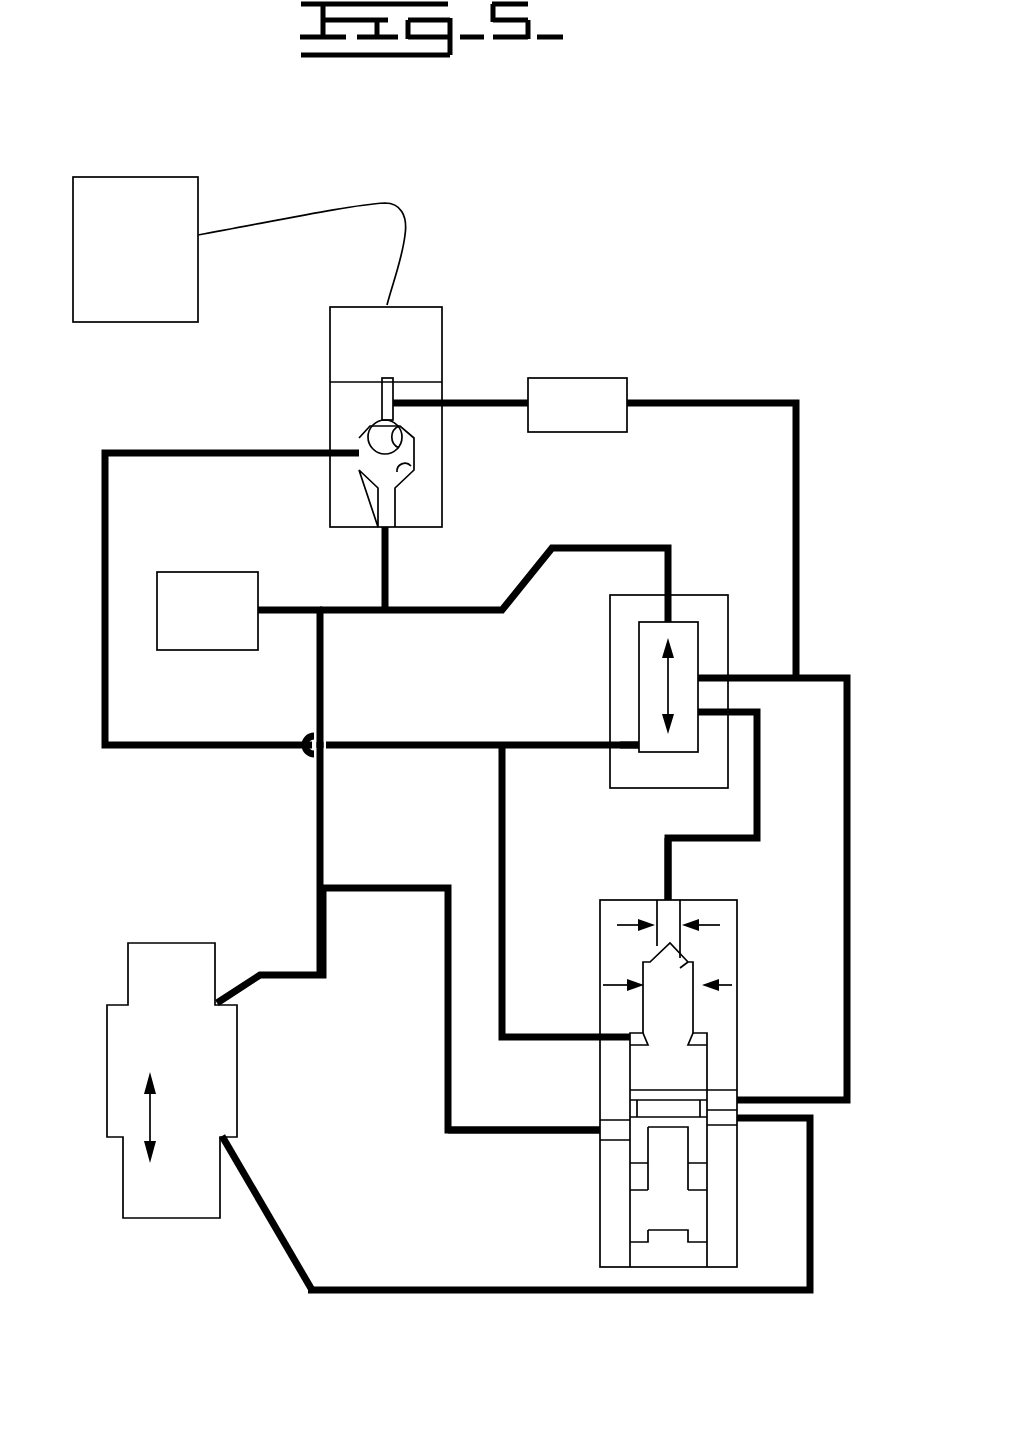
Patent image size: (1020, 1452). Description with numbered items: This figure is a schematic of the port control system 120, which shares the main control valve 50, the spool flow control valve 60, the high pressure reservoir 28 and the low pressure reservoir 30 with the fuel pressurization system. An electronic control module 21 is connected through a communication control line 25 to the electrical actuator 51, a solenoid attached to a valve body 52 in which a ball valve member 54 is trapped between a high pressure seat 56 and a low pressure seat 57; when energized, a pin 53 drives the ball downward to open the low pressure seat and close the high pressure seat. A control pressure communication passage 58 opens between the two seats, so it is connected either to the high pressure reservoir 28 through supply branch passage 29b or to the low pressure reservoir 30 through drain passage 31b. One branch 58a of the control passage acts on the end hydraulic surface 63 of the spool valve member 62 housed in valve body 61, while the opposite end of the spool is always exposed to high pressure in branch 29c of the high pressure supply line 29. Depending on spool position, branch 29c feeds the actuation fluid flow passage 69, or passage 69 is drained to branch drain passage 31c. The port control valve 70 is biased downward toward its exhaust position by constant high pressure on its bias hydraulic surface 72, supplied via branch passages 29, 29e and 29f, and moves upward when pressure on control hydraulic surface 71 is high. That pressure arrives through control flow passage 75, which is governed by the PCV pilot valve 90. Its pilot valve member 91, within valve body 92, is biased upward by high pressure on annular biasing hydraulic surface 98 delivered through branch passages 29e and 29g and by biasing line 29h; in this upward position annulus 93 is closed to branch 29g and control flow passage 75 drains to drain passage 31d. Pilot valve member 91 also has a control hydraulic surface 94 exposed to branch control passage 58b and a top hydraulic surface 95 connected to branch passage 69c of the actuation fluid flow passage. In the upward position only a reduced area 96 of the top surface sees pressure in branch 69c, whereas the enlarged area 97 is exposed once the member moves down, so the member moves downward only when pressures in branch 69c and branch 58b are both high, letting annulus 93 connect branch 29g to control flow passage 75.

The electronic control module 21 is at (198, 198).
The communication control line 25 is at (402, 183).
The high pressure actuation fluid reservoir 28 is at (188, 572).
The high pressure supply line 29 is at (290, 616).
The high pressure supply branch passage 29b is at (388, 577).
The high pressure supply line branch 29c is at (450, 614).
The supply branch passage 29e is at (318, 688).
The high pressure biasing line 29f is at (318, 838).
The supply branch passage 29g is at (380, 885).
The high pressure biasing line 29h is at (585, 1130).
The low pressure reservoir 30 is at (593, 378).
The low pressure drain passage 31b is at (480, 400).
The branch drain passage 31c is at (706, 407).
The drain passage 31d is at (818, 674).
The main control valve 50 is at (434, 292).
The electrical actuator 51 is at (442, 328).
The valve body 52 is at (330, 495).
The pin 53 is at (380, 400).
The ball valve member 54 is at (360, 448).
The high pressure seat 56 is at (410, 465).
The low pressure seat 57 is at (400, 443).
The control pressure communication passage 58 is at (150, 450).
The control passage branch 58a is at (478, 741).
The branch control passage 58b is at (500, 860).
The spool flow control valve 60 is at (747, 582).
The valve body 61 is at (608, 618).
The spool valve member 62 is at (639, 670).
The end hydraulic surface 63 is at (639, 748).
The actuation fluid flow passage 69 is at (760, 762).
The branch passage 69c is at (672, 872).
The port control valve 70 is at (107, 1047).
The control hydraulic surface 71 is at (232, 1140).
The bias hydraulic surface 72 is at (222, 990).
The control flow passage 75 is at (272, 1207).
The PCV pilot valve 90 is at (698, 1082).
The pilot valve member 91 is at (630, 1065).
The valve body 92 is at (738, 1241).
The annulus 93 is at (670, 1115).
The control hydraulic surface 94 is at (710, 1035).
The top hydraulic surface 95 is at (656, 942).
The reduced area 96 is at (670, 928).
The enlarged area 97 is at (670, 984).
The annular biasing hydraulic surface 98 is at (633, 1170).
The port control system 120 is at (632, 265).